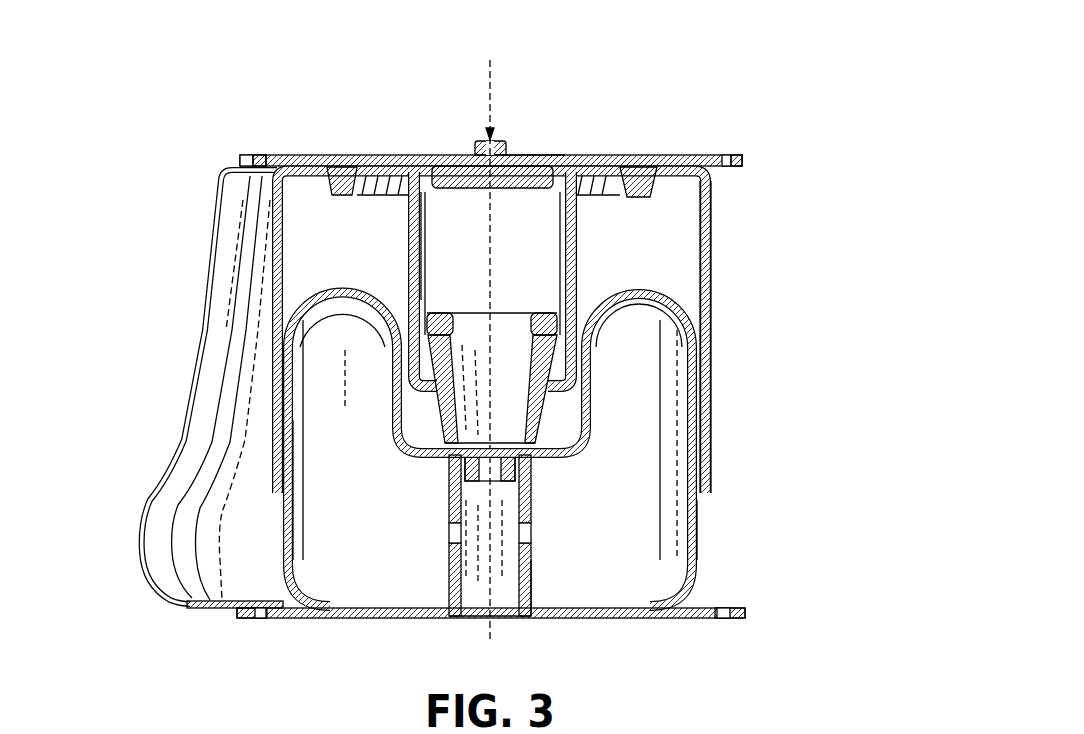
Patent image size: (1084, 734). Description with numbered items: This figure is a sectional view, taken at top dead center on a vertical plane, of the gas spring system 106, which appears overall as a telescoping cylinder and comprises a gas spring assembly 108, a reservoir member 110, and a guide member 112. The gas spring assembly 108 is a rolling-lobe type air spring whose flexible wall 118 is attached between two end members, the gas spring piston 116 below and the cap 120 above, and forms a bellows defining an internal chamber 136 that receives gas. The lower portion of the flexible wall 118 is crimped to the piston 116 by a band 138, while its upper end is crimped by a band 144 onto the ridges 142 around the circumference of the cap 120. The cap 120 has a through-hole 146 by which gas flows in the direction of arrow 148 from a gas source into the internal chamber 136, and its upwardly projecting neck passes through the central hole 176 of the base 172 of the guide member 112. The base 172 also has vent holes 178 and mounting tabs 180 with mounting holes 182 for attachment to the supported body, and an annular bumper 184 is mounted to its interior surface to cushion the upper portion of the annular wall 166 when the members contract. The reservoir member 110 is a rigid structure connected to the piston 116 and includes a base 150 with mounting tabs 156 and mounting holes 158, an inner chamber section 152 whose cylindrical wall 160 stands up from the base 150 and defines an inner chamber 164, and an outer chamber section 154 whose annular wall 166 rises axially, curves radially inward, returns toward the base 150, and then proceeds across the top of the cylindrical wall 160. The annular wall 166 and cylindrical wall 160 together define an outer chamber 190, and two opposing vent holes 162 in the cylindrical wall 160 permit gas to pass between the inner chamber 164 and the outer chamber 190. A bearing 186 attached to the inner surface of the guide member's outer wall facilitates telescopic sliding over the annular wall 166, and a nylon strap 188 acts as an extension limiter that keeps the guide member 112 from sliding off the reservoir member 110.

The gas spring system 106 is at (140, 100).
The gas spring assembly 108 is at (580, 226).
The reservoir member 110 is at (706, 550).
The guide member 112 is at (717, 228).
The gas spring piston 116 is at (542, 408).
The flexible wall 118 is at (577, 273).
The cap 120 is at (530, 153).
The internal chamber 136 is at (421, 226).
The band 138 is at (432, 312).
The ridges 142 is at (538, 190).
The band 144 is at (492, 263).
The through-hole 146 is at (494, 148).
The arrow 148 is at (490, 75).
The base 150 is at (612, 620).
The inner chamber section 152 is at (540, 600).
The outer chamber section 154 is at (332, 285).
The mounting tabs 156 is at (248, 622).
The mounting hole 158 is at (717, 622).
The cylindrical wall 160 is at (449, 588).
The vent holes 162 is at (447, 540).
The inner chamber 164 is at (463, 620).
The annular wall 166 is at (283, 537).
The base 172 is at (322, 155).
The central hole 176 is at (472, 155).
The vent holes 178 is at (393, 155).
The mounting tabs 180 is at (252, 155).
The mounting hole 182 is at (730, 155).
The annular bumper 184 is at (277, 175).
The bearing 186 is at (713, 363).
The strap 188 is at (172, 487).
The outer chamber 190 is at (297, 507).